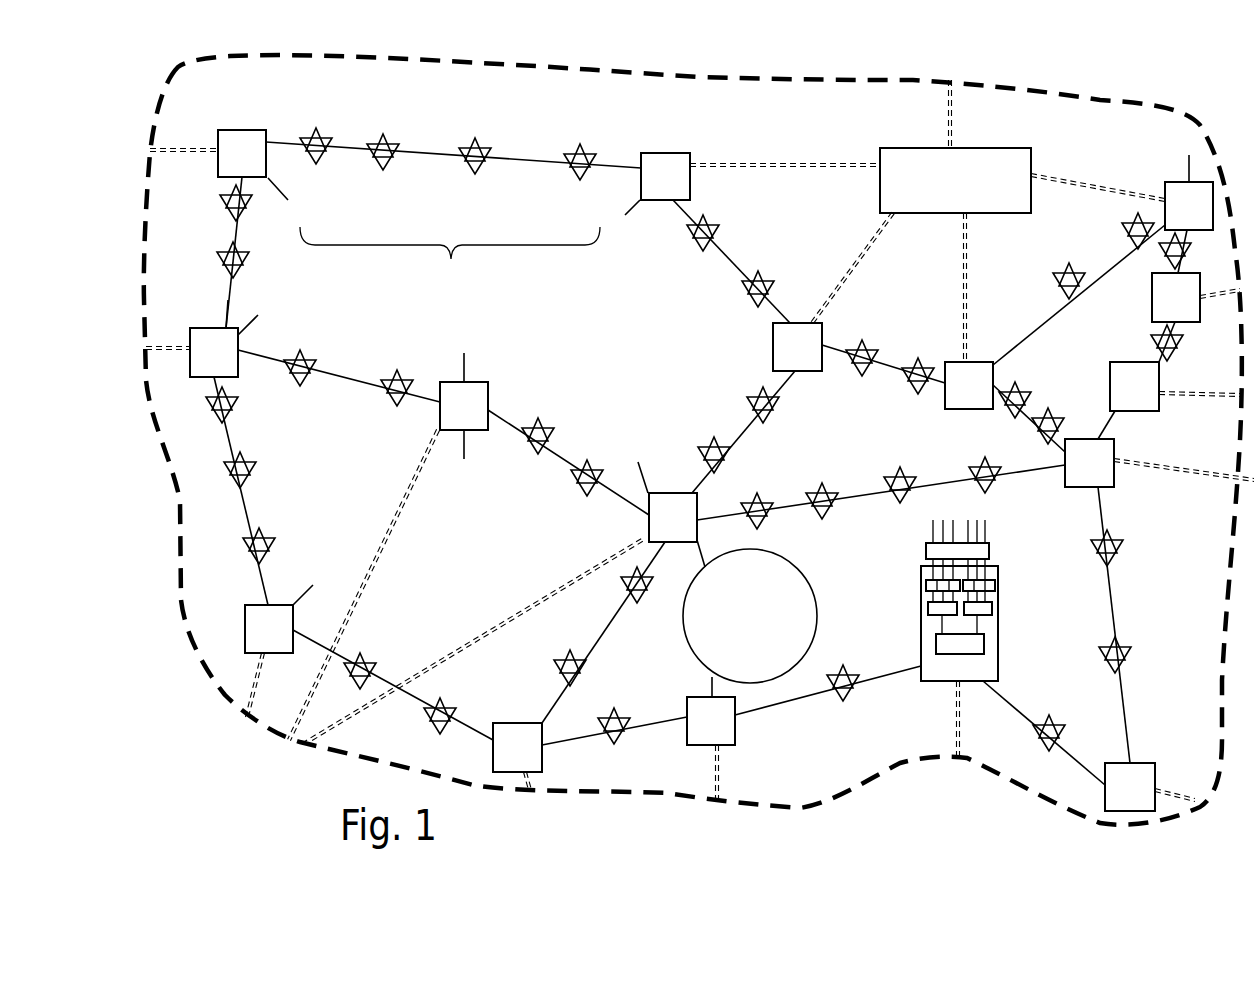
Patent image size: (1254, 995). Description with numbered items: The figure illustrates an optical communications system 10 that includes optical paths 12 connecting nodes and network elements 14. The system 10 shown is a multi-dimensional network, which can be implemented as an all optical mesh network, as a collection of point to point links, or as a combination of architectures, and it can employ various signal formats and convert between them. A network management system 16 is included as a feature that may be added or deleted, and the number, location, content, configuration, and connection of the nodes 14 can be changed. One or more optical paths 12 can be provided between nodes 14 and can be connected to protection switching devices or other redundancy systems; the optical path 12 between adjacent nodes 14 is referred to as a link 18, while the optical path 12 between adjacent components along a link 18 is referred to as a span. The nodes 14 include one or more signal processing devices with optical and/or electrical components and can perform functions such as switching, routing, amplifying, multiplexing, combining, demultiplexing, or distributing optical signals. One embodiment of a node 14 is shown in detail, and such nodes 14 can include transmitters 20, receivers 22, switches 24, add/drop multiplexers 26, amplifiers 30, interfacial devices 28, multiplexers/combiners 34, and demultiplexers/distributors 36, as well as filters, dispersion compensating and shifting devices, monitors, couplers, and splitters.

The optical communications system 10 is at (264, 777).
The optical path 12 is at (543, 161).
The node 14 is at (235, 130).
The amplifier 30 is at (475, 142).
The network management system 16 is at (913, 148).
The link 18 is at (450, 265).
The transmitter 20 is at (926, 587).
The receiver 22 is at (995, 586).
The switch 24 is at (1008, 647).
The add/drop multiplexer 26 is at (984, 647).
The interfacial device 28 is at (990, 543).
The multiplexer/combiner 34 is at (928, 608).
The demultiplexer/distributor 36 is at (992, 609).